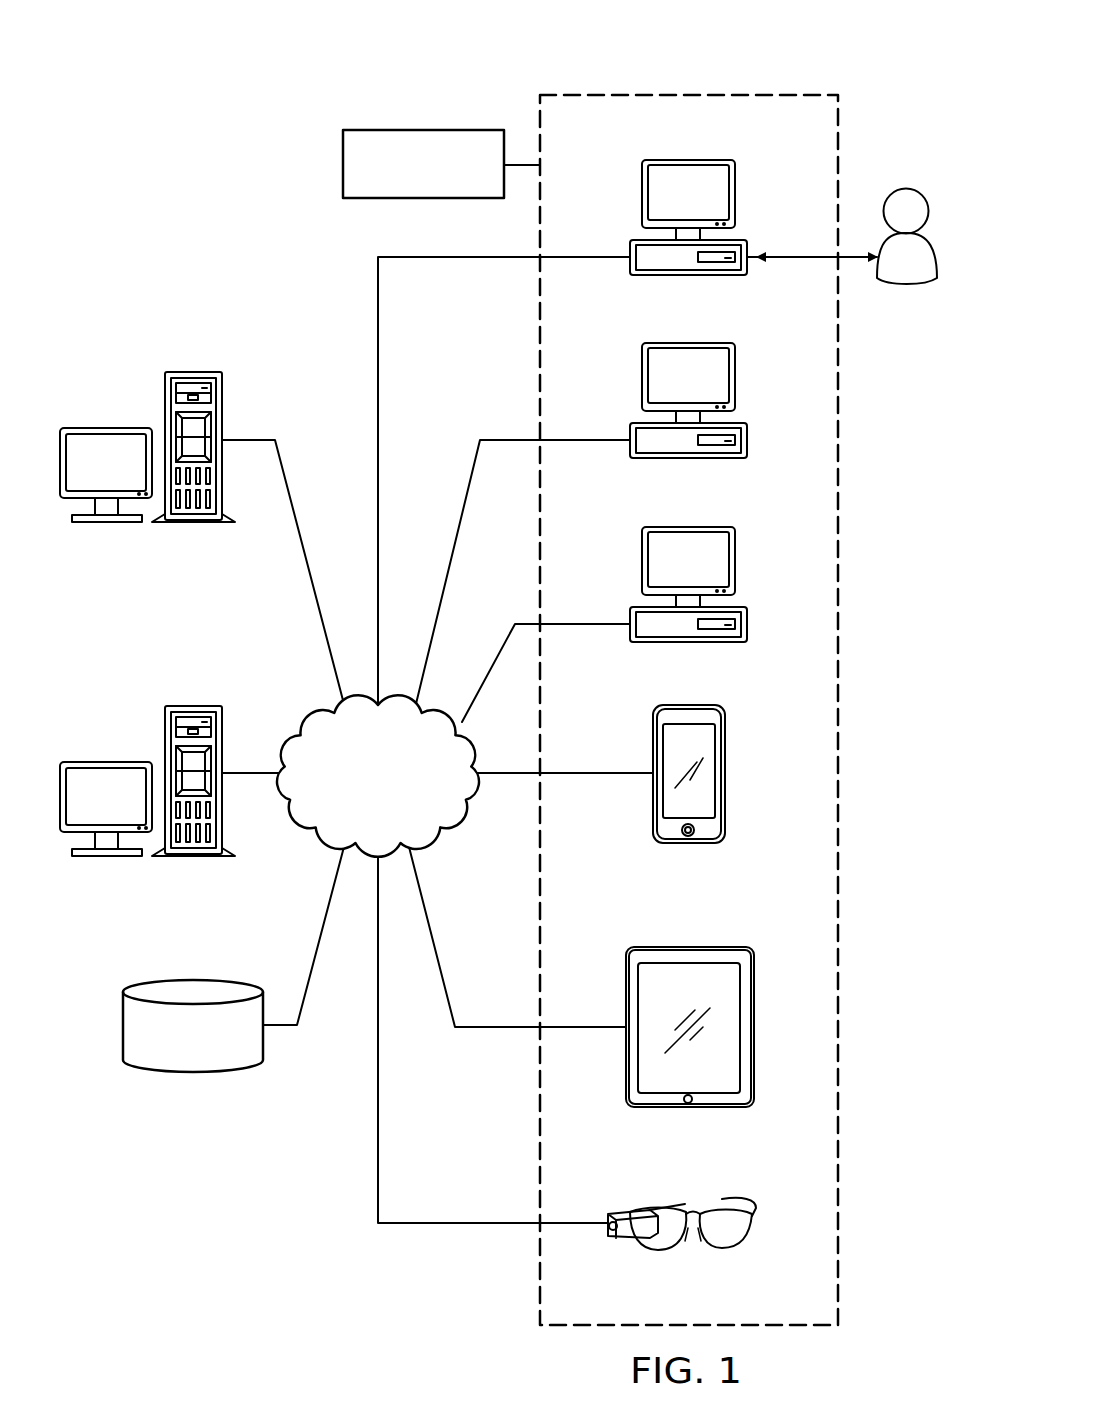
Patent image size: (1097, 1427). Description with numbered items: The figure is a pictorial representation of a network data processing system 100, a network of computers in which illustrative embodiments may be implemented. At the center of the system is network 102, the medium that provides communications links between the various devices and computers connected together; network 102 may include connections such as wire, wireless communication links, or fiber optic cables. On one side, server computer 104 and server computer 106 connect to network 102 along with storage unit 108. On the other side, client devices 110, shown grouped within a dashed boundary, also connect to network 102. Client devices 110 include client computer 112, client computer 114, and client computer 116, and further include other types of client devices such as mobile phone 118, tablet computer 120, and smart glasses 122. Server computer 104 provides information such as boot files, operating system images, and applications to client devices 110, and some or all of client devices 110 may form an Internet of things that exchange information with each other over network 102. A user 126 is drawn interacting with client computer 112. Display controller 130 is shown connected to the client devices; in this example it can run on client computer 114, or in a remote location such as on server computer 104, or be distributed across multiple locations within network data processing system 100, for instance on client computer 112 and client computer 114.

The network data processing system 100 is at (170, 86).
The network 102 is at (355, 807).
The server computer 104 is at (107, 428).
The server computer 106 is at (107, 762).
The storage unit 108 is at (193, 1075).
The client devices 110 is at (750, 88).
The client computer 112 is at (735, 195).
The client computer 114 is at (735, 378).
The client computer 116 is at (735, 561).
The mobile phone 118 is at (725, 790).
The tablet computer 120 is at (754, 1037).
The smart glasses 122 is at (752, 1228).
The user 126 is at (912, 187).
The display controller 130 is at (422, 128).